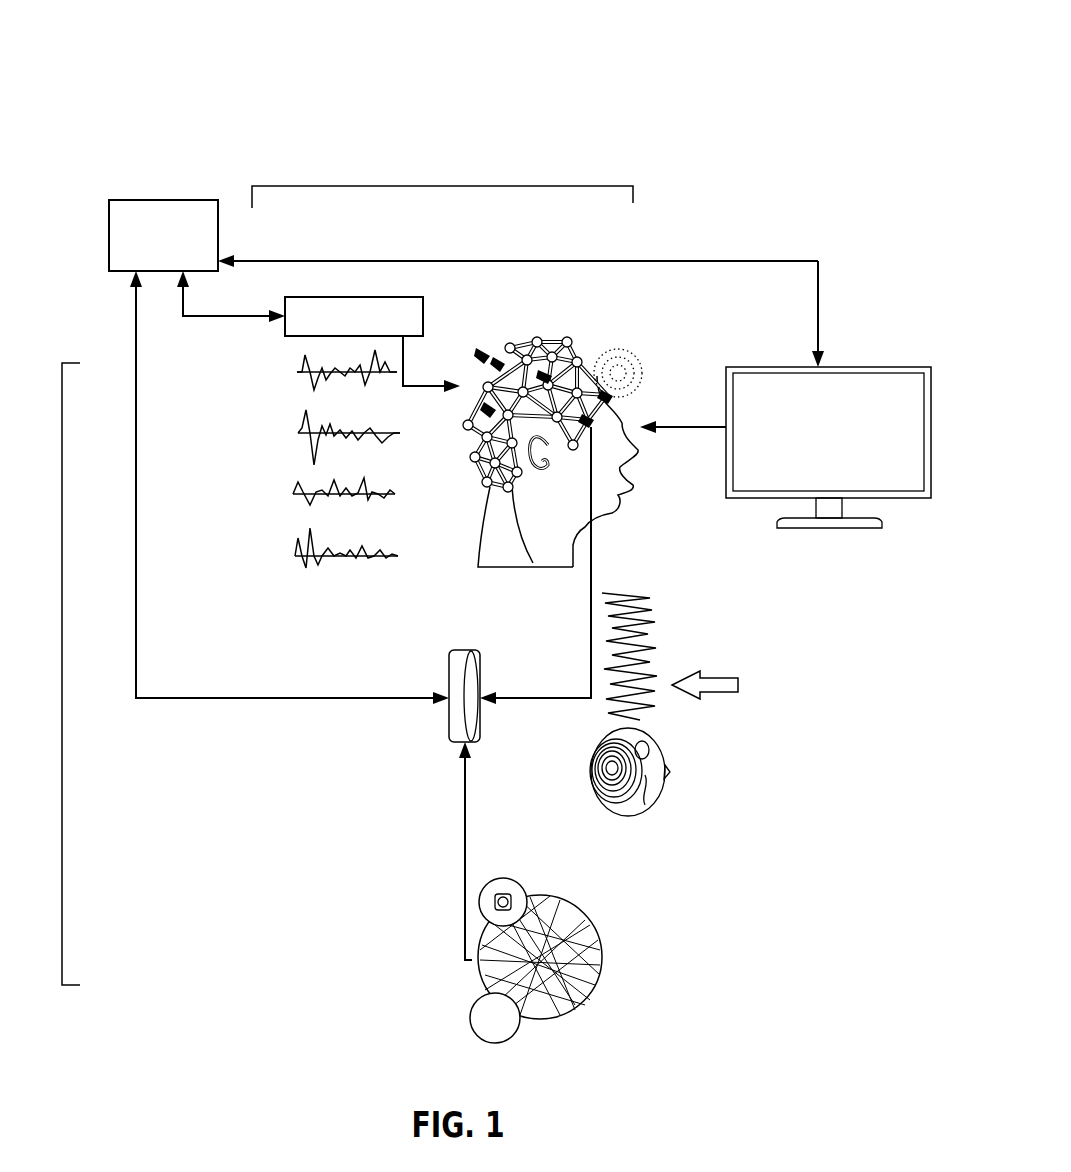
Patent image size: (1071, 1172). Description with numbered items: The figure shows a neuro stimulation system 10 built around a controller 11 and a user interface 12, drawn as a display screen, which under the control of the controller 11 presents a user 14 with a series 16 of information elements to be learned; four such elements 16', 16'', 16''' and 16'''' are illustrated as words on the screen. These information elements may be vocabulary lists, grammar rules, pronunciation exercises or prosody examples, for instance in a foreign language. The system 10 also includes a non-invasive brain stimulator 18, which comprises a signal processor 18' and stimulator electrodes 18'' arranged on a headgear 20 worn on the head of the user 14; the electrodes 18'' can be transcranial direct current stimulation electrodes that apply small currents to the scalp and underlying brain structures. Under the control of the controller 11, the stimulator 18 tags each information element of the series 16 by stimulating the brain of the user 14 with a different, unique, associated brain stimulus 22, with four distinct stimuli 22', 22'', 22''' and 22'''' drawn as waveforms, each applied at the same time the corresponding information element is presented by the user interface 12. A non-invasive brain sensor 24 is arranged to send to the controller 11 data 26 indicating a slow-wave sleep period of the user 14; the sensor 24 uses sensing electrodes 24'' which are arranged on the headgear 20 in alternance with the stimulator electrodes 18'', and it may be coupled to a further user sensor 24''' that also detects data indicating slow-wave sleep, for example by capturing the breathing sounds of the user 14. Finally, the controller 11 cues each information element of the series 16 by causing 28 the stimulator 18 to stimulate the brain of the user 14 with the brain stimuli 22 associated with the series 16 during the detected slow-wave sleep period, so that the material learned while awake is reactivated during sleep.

The neuro stimulation system 10 is at (528, 100).
The controller 11 is at (163, 235).
The user interface 12 is at (905, 367).
The user 14 is at (483, 567).
The series of information elements 16 is at (777, 424).
The information element 16' is at (755, 357).
The information element 16'' is at (738, 393).
The information element 16''' is at (732, 455).
The information element 16'''' is at (740, 500).
The non-invasive brain stimulator 18 is at (442, 180).
The signal processor 18' is at (354, 316).
The stimulator electrodes 18'' is at (525, 413).
The headgear 20 is at (533, 567).
The brain stimulus 22 is at (432, 401).
The brain stimulus 22' is at (301, 373).
The brain stimulus 22'' is at (299, 437).
The brain stimulus 22''' is at (296, 495).
The brain stimulus 22'''' is at (297, 550).
The non-invasive brain sensor 24 is at (54, 674).
The sensing electrodes 24'' is at (631, 355).
The further user sensor 24''' is at (594, 960).
The data 26 is at (527, 697).
The causing 28 is at (228, 697).